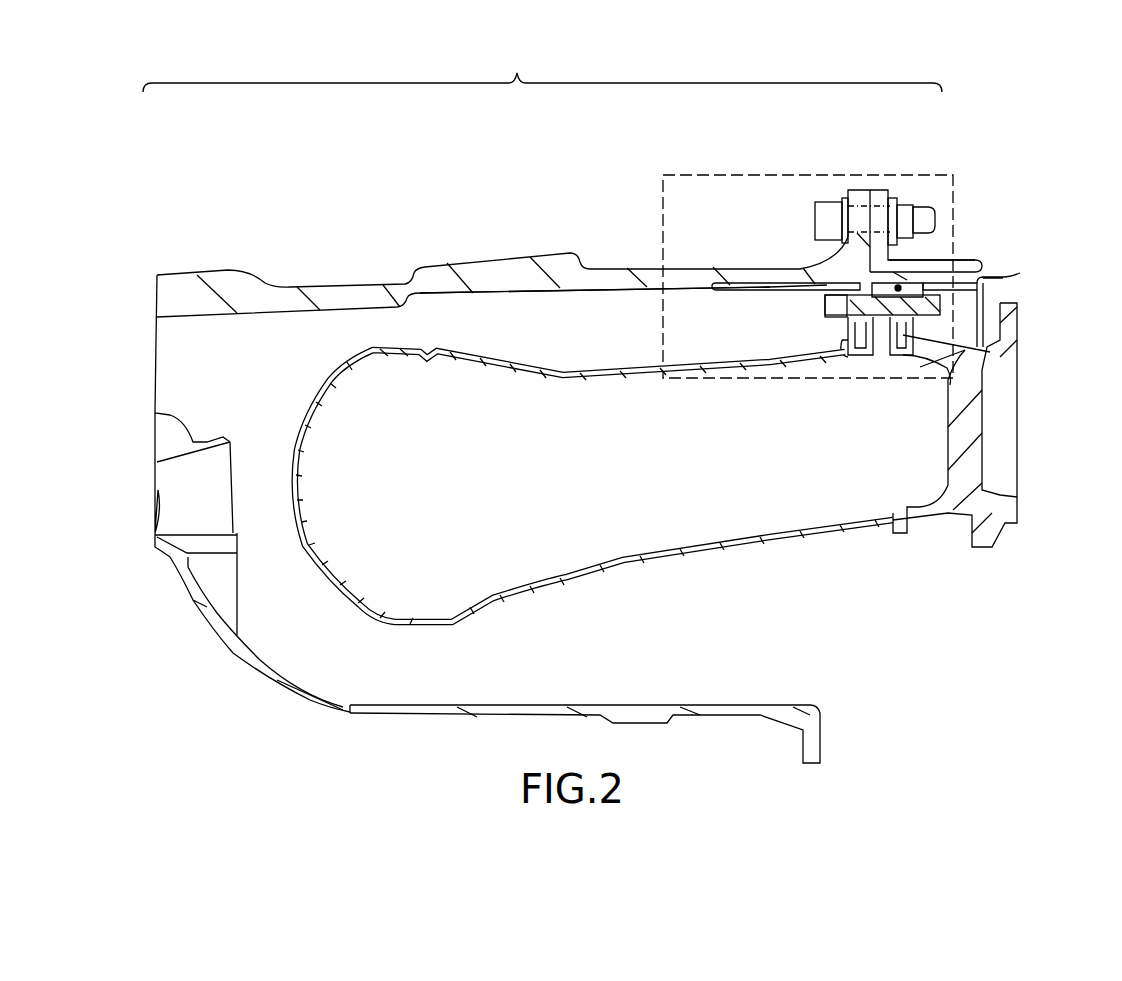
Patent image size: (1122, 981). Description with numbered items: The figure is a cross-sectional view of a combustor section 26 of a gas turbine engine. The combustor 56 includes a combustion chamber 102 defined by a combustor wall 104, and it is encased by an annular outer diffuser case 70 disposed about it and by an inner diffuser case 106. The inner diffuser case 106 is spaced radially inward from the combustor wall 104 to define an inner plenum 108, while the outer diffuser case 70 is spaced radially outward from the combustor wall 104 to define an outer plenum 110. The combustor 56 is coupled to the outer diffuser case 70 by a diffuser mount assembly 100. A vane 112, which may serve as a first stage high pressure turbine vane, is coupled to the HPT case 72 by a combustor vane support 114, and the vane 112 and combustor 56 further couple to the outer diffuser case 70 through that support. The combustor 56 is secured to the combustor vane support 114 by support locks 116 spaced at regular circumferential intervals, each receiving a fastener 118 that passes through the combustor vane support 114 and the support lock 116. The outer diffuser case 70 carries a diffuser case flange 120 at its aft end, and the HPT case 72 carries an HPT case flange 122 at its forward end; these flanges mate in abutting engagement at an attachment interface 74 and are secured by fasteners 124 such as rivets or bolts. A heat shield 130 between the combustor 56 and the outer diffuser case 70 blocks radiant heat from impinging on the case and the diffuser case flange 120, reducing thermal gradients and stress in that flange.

The combustor section 26 is at (542, 68).
The combustor 56 is at (533, 388).
The outer diffuser case 70 is at (206, 287).
The HPT case 72 is at (973, 258).
The attachment interface 74 is at (863, 184).
The diffuser mount assembly 100 is at (700, 175).
The combustion chamber 102 is at (449, 500).
The combustor wall 104 is at (320, 400).
The inner diffuser case 106 is at (350, 713).
The inner plenum 108 is at (681, 646).
The outer plenum 110 is at (577, 347).
The vane 112 is at (970, 430).
The combustor vane support 114 is at (992, 286).
The support lock 116 is at (843, 357).
The fastener 118 is at (877, 355).
The diffuser case flange 120 is at (860, 195).
The HPT case flange 122 is at (880, 196).
The fastener 124 is at (815, 218).
The heat shield 130 is at (745, 292).